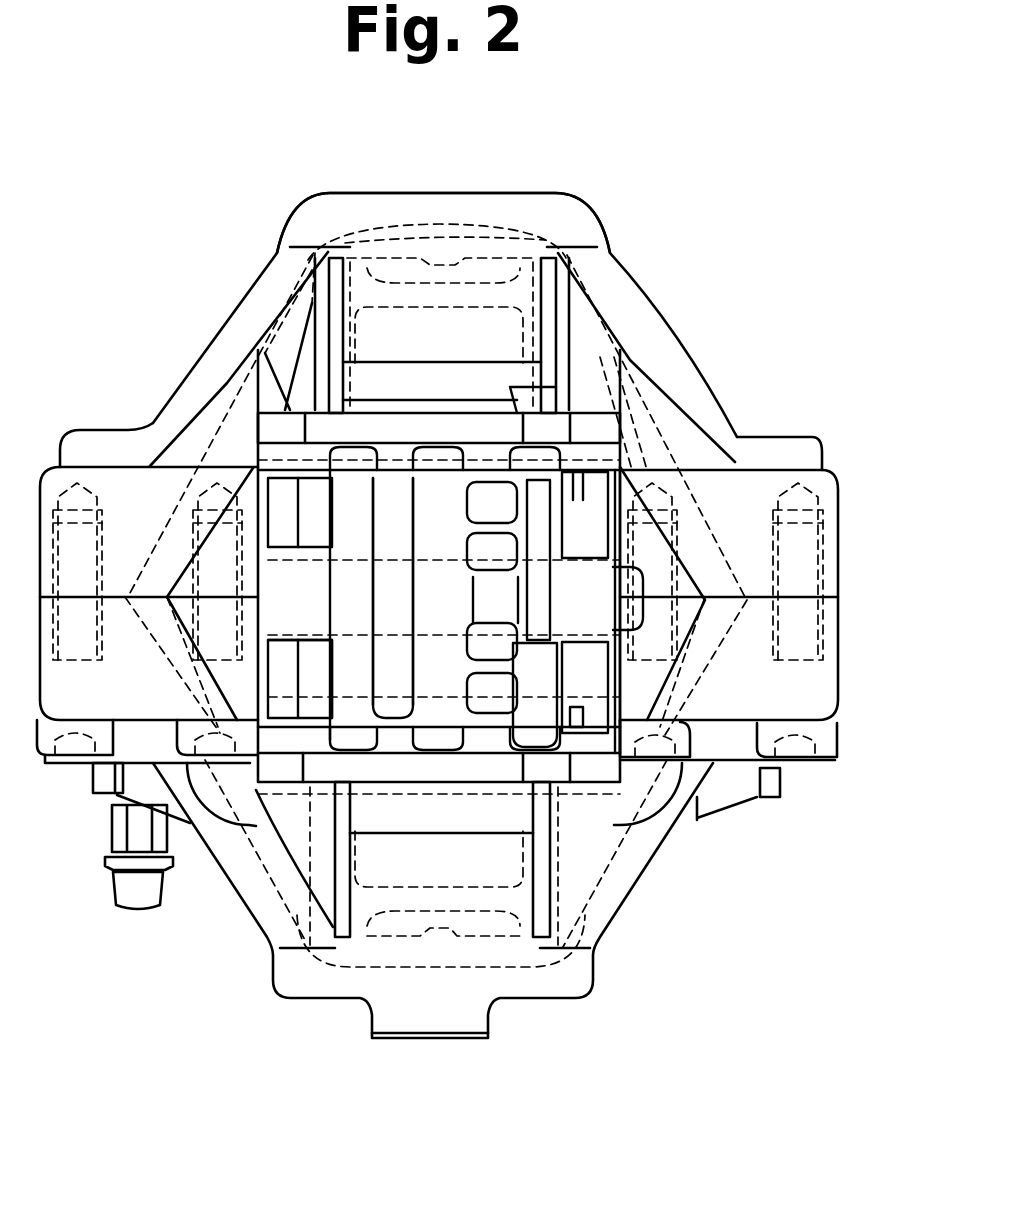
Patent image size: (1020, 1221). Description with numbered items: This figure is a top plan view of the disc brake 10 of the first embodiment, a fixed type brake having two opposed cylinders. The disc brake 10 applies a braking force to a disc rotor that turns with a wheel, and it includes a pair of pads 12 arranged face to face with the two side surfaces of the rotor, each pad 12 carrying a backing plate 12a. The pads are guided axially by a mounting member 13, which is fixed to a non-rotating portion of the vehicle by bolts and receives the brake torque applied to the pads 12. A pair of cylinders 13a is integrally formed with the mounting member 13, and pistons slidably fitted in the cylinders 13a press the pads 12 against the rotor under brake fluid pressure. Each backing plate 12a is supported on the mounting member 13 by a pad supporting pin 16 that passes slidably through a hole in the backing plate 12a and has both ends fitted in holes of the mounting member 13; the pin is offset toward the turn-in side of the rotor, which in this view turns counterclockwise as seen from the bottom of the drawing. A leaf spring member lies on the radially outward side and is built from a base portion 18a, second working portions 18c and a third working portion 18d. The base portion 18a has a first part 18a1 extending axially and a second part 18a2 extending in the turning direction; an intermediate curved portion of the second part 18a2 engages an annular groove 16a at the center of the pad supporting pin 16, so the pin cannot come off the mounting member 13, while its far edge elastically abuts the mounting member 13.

The disc brake 10 is at (640, 200).
The pad 12 is at (600, 520).
The backing plate 12a is at (598, 490).
The mounting member 13 is at (727, 722).
The cylinder 13a is at (553, 213).
The pad supporting pin 16 is at (548, 402).
The annular groove 16a is at (614, 522).
The base portion 18a is at (470, 610).
The first part 18a1 is at (430, 528).
The second part 18a2 is at (587, 603).
The second working portion 18c is at (578, 488).
The third working portion 18d is at (347, 667).